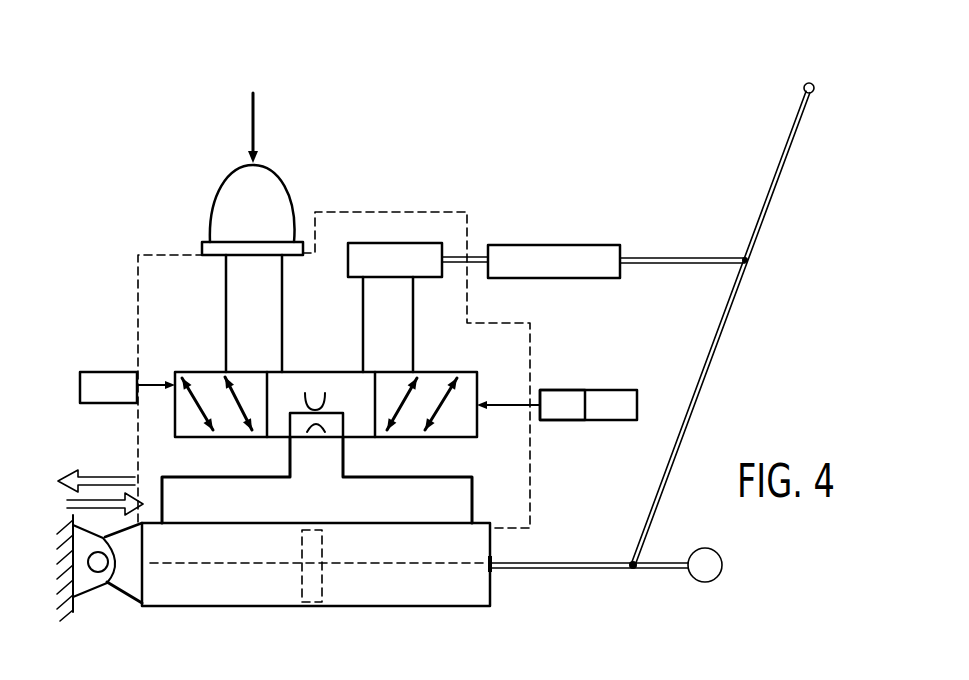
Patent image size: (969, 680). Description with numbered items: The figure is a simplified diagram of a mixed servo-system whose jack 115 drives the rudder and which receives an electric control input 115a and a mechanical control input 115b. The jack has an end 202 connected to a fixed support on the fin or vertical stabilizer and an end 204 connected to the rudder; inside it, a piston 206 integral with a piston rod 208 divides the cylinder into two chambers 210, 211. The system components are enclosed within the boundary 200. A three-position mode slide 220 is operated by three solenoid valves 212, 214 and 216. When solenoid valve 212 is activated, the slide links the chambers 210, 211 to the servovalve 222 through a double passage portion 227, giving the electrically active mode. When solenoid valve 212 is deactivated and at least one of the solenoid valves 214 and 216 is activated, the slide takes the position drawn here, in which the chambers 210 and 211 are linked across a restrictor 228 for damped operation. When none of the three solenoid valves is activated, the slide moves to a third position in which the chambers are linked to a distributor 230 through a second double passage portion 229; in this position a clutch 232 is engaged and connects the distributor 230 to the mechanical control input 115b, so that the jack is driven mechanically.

The servo-system jack 115 is at (299, 613).
The electric control input 115a is at (220, 168).
The mechanical control input 115b is at (762, 176).
The control unit boundary 200 is at (138, 255).
The jack end 202 is at (122, 582).
The jack end 204 is at (700, 575).
The piston 206 is at (318, 592).
The piston rod 208 is at (553, 570).
The chamber 210 is at (187, 580).
The chamber 211 is at (423, 587).
The solenoid valve 212 is at (95, 382).
The solenoid valve 214 is at (557, 405).
The solenoid valve 216 is at (610, 402).
The mode slide 220 is at (431, 364).
The servovalve 222 is at (263, 192).
The double passage portion 227 is at (207, 377).
The restrictor 228 is at (330, 398).
The double passage portion 229 is at (410, 428).
The distributor 230 is at (415, 255).
The clutch 232 is at (563, 255).